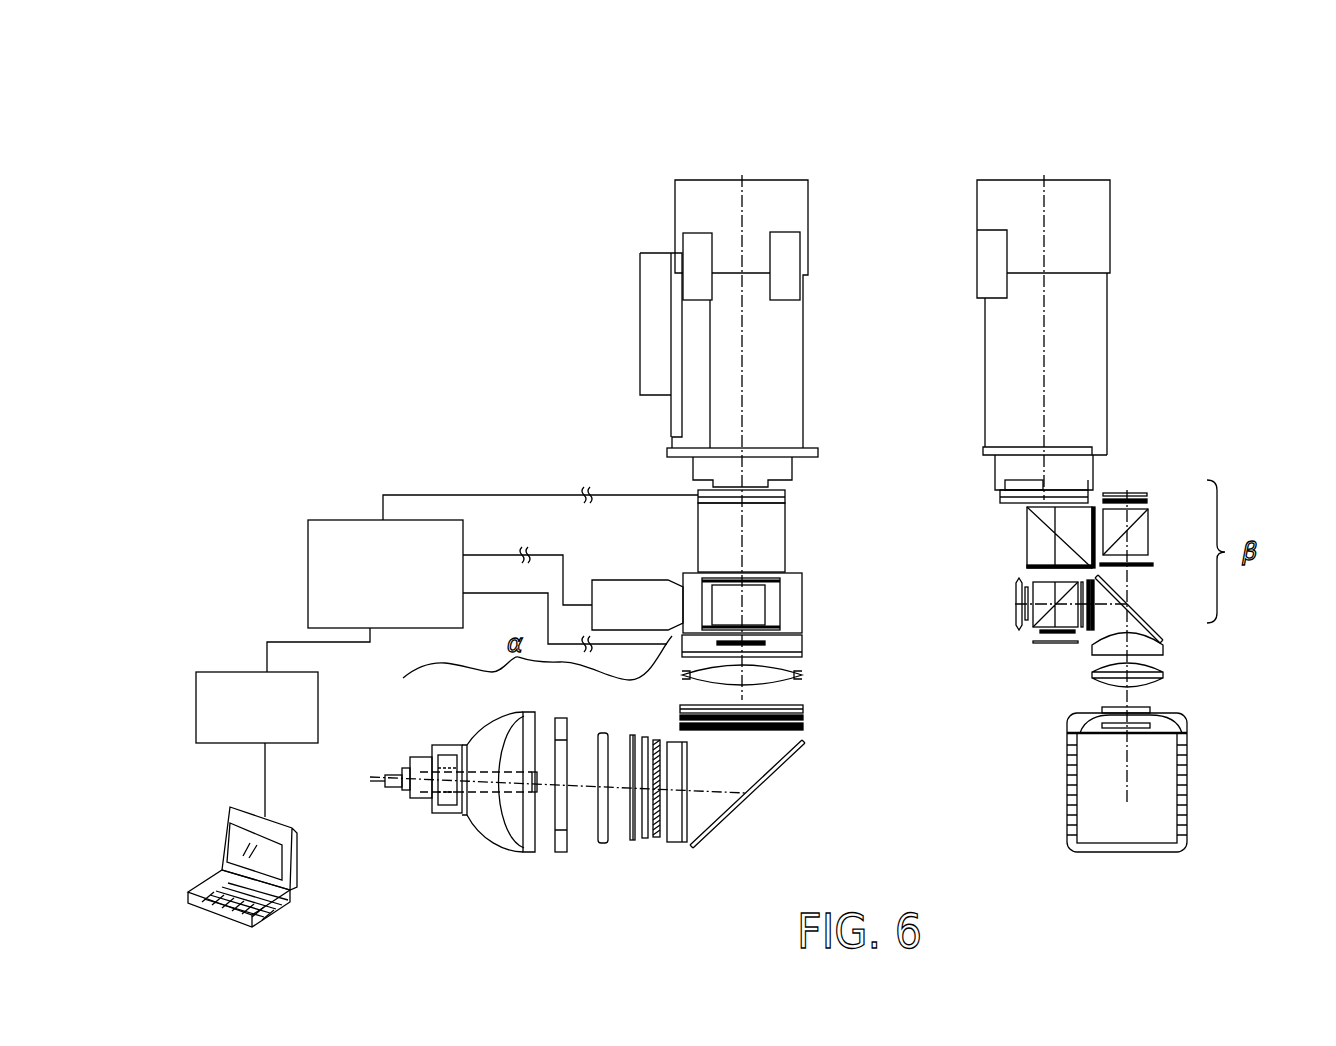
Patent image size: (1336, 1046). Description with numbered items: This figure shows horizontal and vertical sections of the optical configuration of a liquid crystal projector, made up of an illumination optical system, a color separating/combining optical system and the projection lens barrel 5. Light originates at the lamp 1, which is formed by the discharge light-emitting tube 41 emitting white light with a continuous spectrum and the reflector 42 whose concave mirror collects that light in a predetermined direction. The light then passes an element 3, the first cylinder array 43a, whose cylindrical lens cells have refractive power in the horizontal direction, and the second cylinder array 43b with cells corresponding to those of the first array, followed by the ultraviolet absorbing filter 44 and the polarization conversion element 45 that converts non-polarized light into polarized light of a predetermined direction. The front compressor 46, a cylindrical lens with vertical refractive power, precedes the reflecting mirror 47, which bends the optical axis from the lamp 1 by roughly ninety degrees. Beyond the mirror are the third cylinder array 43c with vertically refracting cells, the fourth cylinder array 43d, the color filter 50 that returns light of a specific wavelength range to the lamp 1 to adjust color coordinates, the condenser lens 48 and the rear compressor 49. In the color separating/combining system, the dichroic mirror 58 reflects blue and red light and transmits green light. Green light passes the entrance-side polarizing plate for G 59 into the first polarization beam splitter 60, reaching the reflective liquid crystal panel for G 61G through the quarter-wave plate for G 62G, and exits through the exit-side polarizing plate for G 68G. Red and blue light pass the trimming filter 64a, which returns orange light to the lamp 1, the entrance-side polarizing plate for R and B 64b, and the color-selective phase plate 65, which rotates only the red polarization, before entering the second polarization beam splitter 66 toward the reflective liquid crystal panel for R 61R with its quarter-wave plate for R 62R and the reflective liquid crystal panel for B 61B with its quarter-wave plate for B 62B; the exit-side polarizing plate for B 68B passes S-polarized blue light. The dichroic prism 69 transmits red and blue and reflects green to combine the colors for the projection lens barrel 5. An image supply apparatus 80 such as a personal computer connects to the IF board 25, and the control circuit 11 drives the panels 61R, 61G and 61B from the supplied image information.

The lamp 1 is at (557, 786).
The filter 3 is at (560, 852).
The projection lens barrel 5 is at (1100, 393).
The control circuit 11 is at (308, 545).
The IF board 25 is at (196, 700).
The discharge light-emitting tube 41 is at (463, 763).
The reflector 42 is at (490, 833).
The first cylinder array 43a is at (603, 845).
The second cylinder array 43b is at (645, 840).
The third cylinder array 43c is at (812, 728).
The fourth cylinder array 43d is at (808, 707).
The ultraviolet absorbing filter 44 is at (631, 842).
The polarization conversion element 45 is at (657, 840).
The front compressor 46 is at (682, 845).
The reflecting mirror 47 is at (736, 804).
The condenser lens 48 is at (800, 675).
The rear compressor 49 is at (800, 647).
The color filter 50 is at (808, 718).
The dichroic mirror 58 is at (1163, 640).
The entrance-side polarizing plate for G 59 is at (1153, 564).
The first polarization beam splitter 60 is at (1150, 530).
The reflective liquid crystal panel for B 61B is at (1017, 593).
The reflective liquid crystal panel for G 61G is at (1147, 494).
The reflective liquid crystal panel for R 61R is at (1040, 645).
The quarter-wave plate for B 62B is at (1024, 612).
The quarter-wave plate for G 62G is at (1148, 501).
The quarter-wave plate for R 62R is at (1045, 635).
The trimming filter 64a is at (1092, 630).
The entrance-side polarizing plate for R and B 64b is at (1087, 632).
The color-selective phase plate 65 is at (1082, 628).
The second polarization beam splitter 66 is at (1045, 588).
The exit-side polarizing plate for B 68B is at (1040, 567).
The exit-side polarizing plate for G 68G is at (1094, 507).
The dichroic prism 69 is at (1032, 533).
The image supply apparatus 80 is at (298, 858).